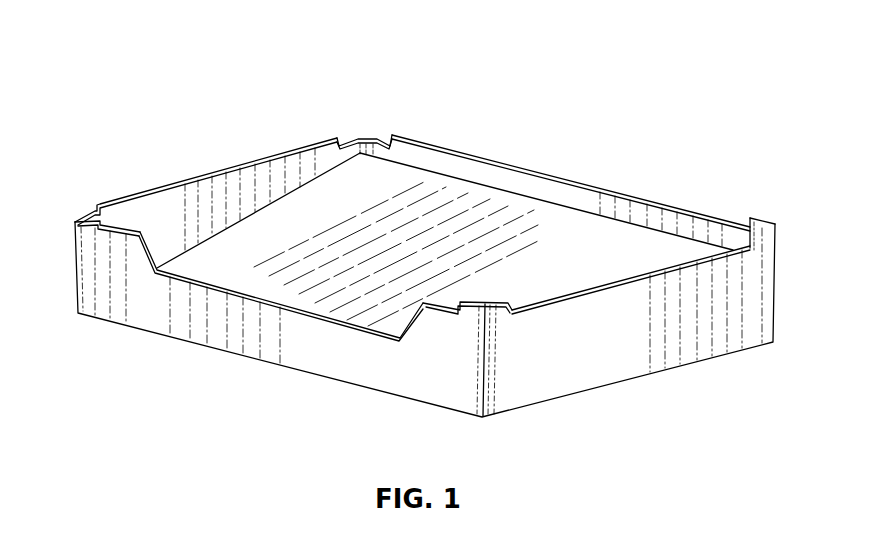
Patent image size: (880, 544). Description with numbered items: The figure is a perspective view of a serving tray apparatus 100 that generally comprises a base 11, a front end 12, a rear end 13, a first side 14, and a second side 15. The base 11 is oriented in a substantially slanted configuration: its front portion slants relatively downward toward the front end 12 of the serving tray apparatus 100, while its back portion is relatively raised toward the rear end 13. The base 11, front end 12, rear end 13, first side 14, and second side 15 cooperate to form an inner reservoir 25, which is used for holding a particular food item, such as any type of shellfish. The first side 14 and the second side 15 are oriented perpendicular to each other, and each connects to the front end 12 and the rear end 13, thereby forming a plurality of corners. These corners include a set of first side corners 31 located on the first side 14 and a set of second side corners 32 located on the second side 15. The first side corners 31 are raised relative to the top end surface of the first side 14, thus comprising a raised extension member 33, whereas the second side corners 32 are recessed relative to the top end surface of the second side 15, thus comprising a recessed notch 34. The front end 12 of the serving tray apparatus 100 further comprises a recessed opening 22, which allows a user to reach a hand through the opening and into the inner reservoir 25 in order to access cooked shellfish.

The serving tray apparatus 100 is at (592, 106).
The base 11 is at (461, 190).
The front end 12 is at (287, 357).
The rear end 13 is at (668, 220).
The first side 14 is at (572, 377).
The second side 15 is at (155, 202).
The recessed opening 22 is at (182, 277).
The inner reservoir 25 is at (305, 192).
The first side corners 31 is at (773, 296).
The second side corners 32 is at (75, 262).
The raised extension member 33 is at (775, 226).
The recessed notch 34 is at (367, 135).